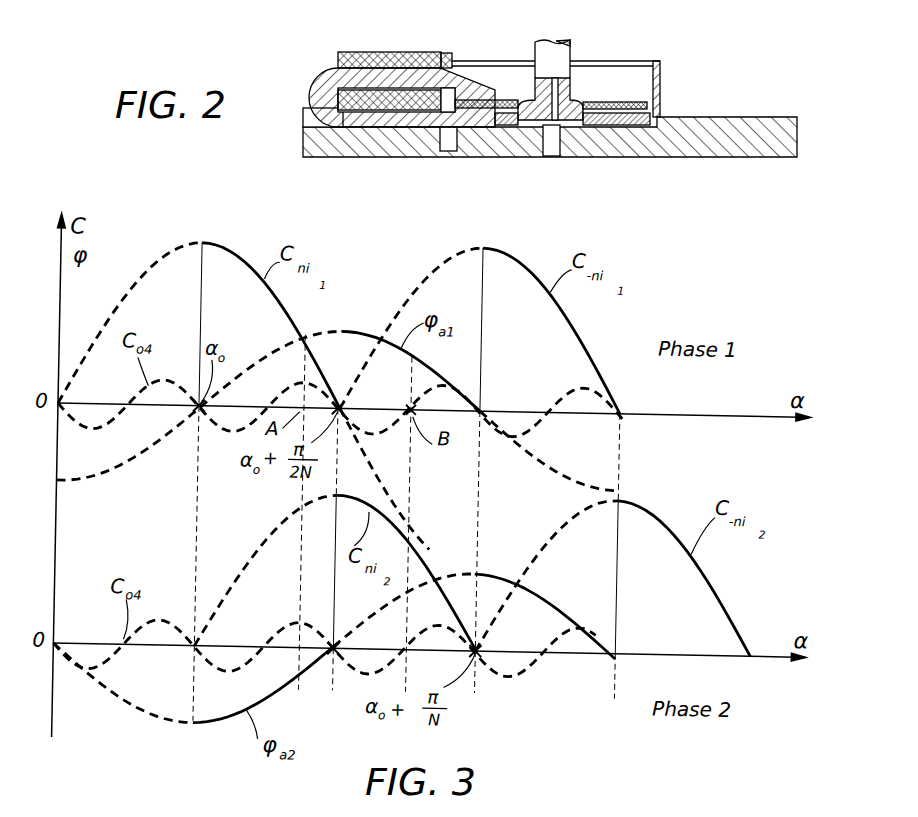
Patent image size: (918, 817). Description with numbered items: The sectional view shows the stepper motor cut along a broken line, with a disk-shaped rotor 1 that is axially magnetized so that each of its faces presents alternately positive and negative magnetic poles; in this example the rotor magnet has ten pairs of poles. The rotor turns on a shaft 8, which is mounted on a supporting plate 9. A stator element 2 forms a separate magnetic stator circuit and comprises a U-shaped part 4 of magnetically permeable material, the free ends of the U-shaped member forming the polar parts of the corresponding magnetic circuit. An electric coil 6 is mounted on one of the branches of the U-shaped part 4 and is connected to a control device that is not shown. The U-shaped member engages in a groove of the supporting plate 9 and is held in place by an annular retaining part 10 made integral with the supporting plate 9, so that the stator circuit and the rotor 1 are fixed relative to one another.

The rotor 1 is at (617, 103).
The stator element 2 is at (389, 63).
The U-shaped part 4 is at (314, 78).
The electric coil 6 is at (352, 51).
The shaft 8 is at (567, 90).
The supporting plate 9 is at (722, 127).
The annular retaining part 10 is at (447, 58).